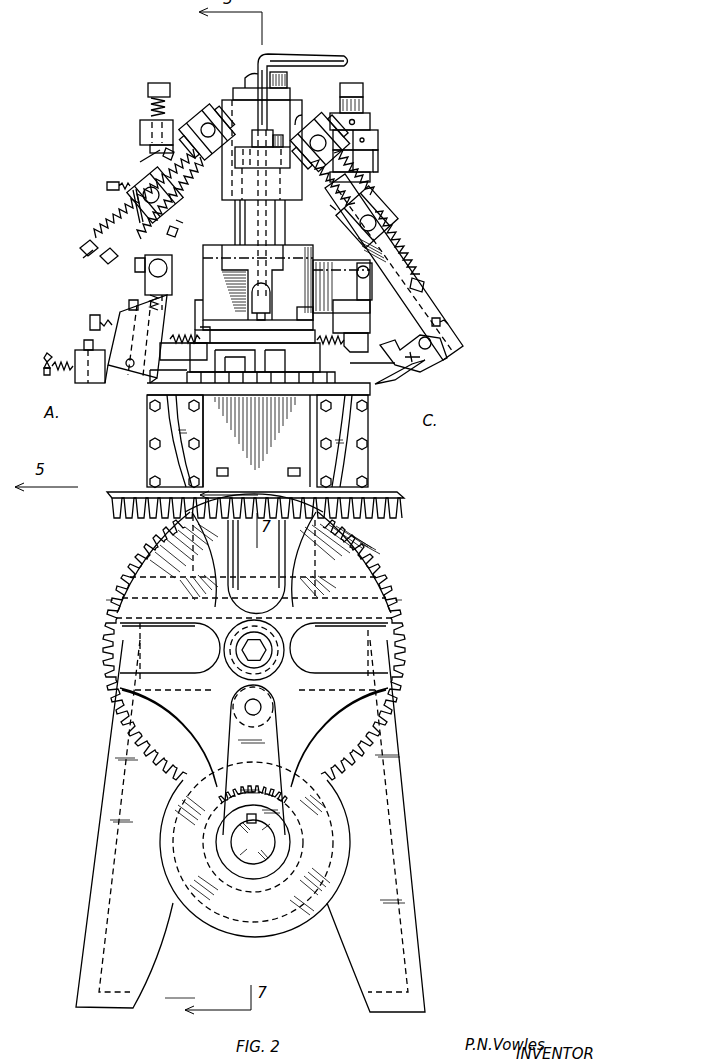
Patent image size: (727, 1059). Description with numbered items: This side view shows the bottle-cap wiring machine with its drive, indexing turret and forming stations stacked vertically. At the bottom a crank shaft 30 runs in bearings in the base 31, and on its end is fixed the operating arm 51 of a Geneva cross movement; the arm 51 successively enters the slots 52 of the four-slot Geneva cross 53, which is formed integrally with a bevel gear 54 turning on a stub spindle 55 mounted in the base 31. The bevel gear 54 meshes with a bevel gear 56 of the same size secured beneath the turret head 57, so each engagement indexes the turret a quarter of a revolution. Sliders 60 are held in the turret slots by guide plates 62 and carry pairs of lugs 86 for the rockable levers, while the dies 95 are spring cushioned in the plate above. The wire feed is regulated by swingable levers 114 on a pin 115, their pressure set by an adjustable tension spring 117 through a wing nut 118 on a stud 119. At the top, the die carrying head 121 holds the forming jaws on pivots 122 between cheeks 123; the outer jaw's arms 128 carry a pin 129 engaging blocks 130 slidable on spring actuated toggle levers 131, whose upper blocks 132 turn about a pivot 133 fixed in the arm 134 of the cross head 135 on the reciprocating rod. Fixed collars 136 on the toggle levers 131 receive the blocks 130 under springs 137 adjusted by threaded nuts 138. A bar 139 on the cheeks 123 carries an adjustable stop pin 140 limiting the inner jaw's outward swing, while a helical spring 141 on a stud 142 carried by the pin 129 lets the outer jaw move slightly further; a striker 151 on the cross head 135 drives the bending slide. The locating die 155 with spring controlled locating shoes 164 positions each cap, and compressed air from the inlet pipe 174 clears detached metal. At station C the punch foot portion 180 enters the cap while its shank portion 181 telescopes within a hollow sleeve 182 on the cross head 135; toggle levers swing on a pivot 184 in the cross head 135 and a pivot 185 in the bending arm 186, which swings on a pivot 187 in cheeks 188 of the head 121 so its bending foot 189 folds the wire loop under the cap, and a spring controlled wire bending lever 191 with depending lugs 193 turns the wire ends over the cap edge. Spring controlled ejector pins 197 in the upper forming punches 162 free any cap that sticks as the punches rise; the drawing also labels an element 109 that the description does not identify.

The crank shaft 30 is at (260, 840).
The base 31 is at (377, 860).
The operating arm 51 is at (263, 760).
The slots 52 is at (176, 233).
The Geneva cross 53 is at (372, 618).
The bevel gear 54 is at (398, 585).
The stub spindle 55 is at (267, 650).
The bevel gear 56 is at (402, 510).
The turret head 57 is at (227, 422).
The slider 60 is at (147, 477).
The guide plates 62 is at (153, 450).
The lugs 86 is at (368, 465).
The dies 95 is at (173, 372).
The bracket 109 is at (130, 365).
The levers 114 is at (78, 353).
The pin 115 is at (87, 346).
The adjustable tension spring 117 is at (44, 357).
The wing nut 118 is at (45, 365).
The stud 119 is at (47, 375).
The die carrying head 121 is at (290, 275).
The pivots 122 is at (186, 248).
The cheeks 123 is at (182, 270).
The arms 128 is at (137, 230).
The pin 129 is at (140, 162).
The blocks 130 is at (165, 207).
The toggle levers 131 is at (85, 253).
The blocks 132 is at (233, 110).
The pivot 133 is at (226, 103).
The arm 134 is at (185, 122).
The cross head 135 is at (252, 112).
The fixed collars 136 is at (135, 182).
The springs 137 is at (117, 212).
The threaded nuts 138 is at (105, 258).
The bar 139 is at (120, 315).
The adjustable stop pin 140 is at (92, 322).
The helical spring 141 is at (133, 195).
The stud 142 is at (108, 187).
The striker 151 is at (155, 107).
The locating die 155 is at (210, 345).
The upper forming punch 162 is at (268, 230).
The locating shoes 164 is at (200, 332).
The inlet pipe 174 is at (295, 57).
The foot portion 180 is at (432, 322).
The shank portion 181 is at (355, 92).
The hollow sleeve 182 is at (400, 238).
The pivot 184 is at (372, 143).
The pivot 185 is at (372, 212).
The bending arm 186 is at (410, 300).
The pivot 187 is at (397, 249).
The cheeks 188 is at (355, 310).
The bending foot 189 is at (377, 383).
The wire bending lever 191 is at (425, 349).
The lugs 193 is at (408, 357).
The ejector pins 197 is at (350, 363).